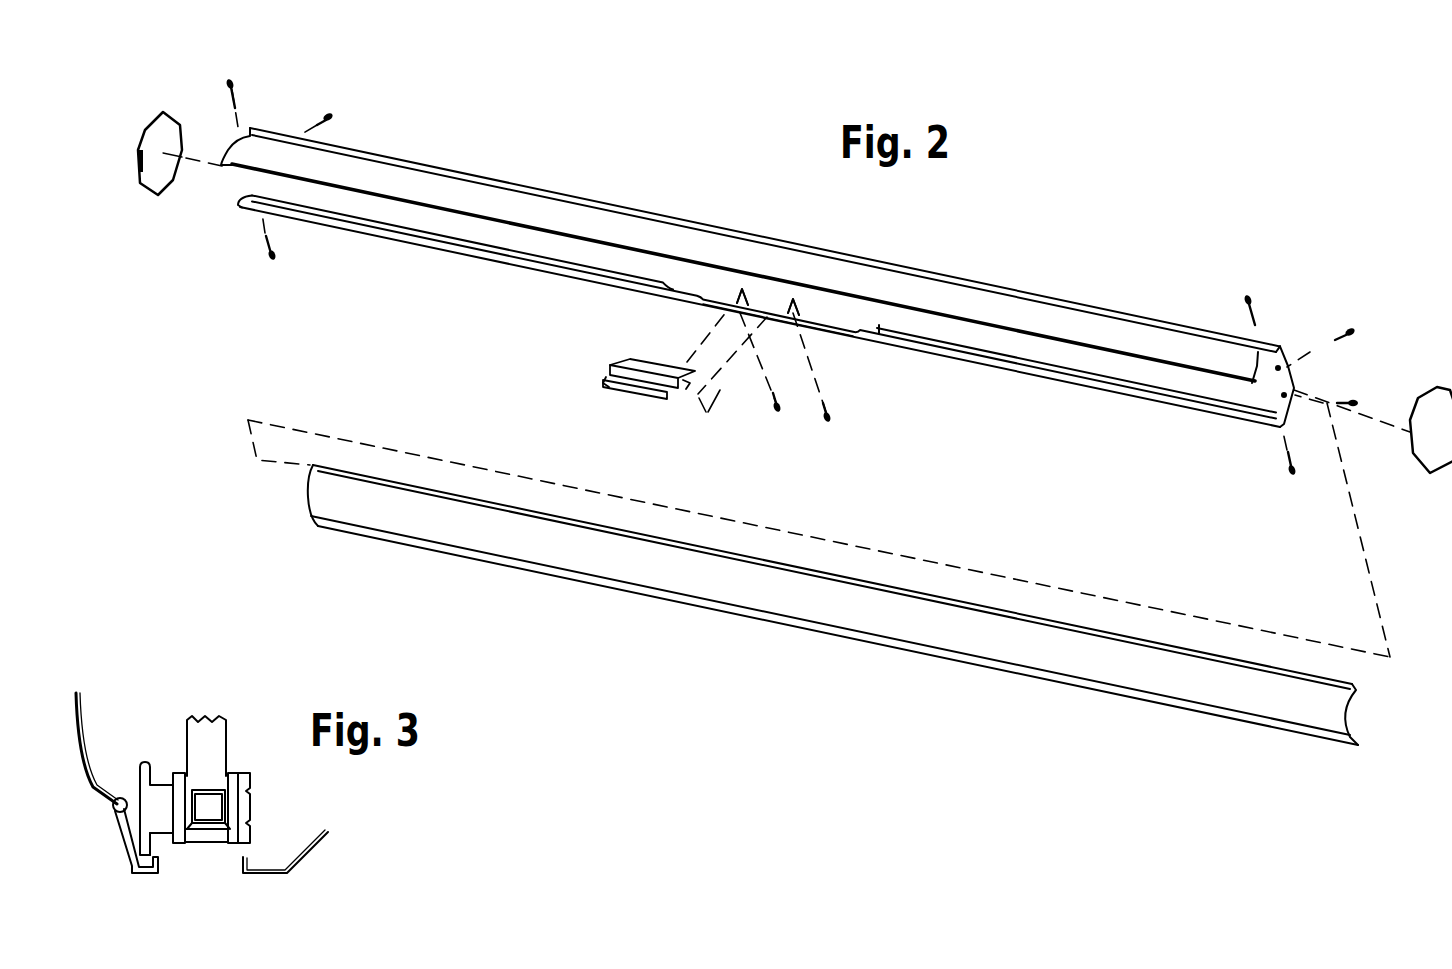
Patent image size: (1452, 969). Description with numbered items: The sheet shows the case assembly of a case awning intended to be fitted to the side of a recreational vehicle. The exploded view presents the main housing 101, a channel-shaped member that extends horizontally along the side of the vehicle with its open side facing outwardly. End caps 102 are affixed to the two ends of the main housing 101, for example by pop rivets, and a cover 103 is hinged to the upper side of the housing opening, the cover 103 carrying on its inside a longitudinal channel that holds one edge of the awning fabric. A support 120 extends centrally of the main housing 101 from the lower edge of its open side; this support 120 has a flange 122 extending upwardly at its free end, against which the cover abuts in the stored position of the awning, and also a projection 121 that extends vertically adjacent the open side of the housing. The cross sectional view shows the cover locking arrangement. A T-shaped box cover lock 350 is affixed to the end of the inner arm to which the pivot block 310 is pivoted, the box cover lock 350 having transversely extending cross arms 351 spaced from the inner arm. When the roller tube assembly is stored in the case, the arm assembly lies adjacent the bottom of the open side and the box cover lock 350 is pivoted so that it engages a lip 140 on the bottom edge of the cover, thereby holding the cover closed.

In FIG. 2, the main housing 101 is at (525, 198).
In FIG. 3, the main housing 101 is at (287, 875).
In FIG. 2, the end caps 102 is at (173, 110).
In FIG. 2, the cover 103 is at (567, 566).
In FIG. 2, the support 120 is at (630, 388).
In FIG. 2, the projection 121 is at (690, 378).
In FIG. 2, the flange 122 is at (604, 386).
In FIG. 3, the lip 140 is at (140, 873).
In FIG. 3, the pivot block 310 is at (222, 737).
In FIG. 3, the box cover lock 350 is at (170, 784).
In FIG. 3, the cross arms 351 is at (150, 840).